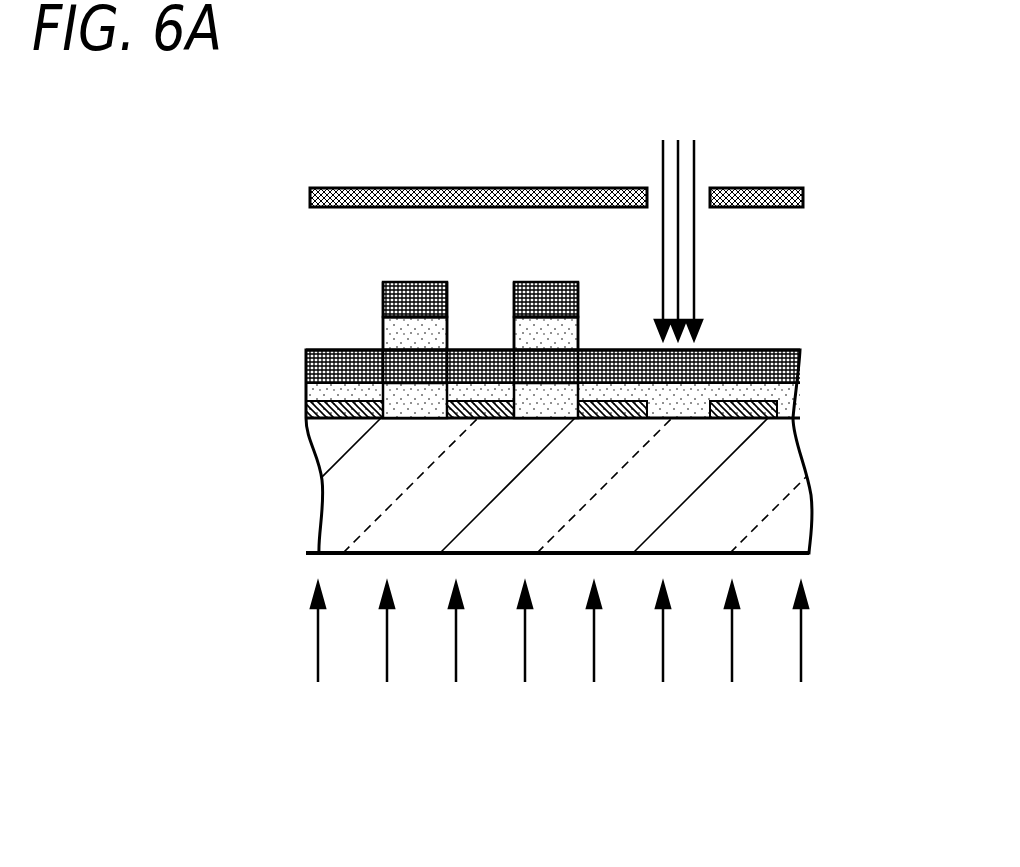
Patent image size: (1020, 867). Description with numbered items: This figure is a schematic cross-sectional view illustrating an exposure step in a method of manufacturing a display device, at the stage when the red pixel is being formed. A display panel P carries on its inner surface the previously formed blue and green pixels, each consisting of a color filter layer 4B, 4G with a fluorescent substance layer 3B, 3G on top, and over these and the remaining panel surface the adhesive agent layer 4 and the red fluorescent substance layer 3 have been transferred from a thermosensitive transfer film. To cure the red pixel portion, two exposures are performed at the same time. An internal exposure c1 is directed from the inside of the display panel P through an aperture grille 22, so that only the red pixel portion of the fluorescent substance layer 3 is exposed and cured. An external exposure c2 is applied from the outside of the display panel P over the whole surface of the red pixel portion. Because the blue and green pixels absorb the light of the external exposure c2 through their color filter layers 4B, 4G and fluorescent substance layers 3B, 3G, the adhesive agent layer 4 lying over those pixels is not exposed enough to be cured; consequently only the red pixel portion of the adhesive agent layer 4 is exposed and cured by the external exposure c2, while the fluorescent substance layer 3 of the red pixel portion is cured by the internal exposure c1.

The display panel P is at (780, 477).
The fluorescent substance layer 3 is at (800, 360).
The adhesive agent layer 4 is at (783, 400).
The fluorescent substance layer 3B is at (407, 363).
The color filter layer 4B is at (410, 402).
The fluorescent substance layer 3G is at (557, 360).
The color filter layer 4G is at (562, 400).
The aperture grille 22 is at (803, 193).
The internal exposure c1 is at (694, 149).
The external exposure c2 is at (801, 650).